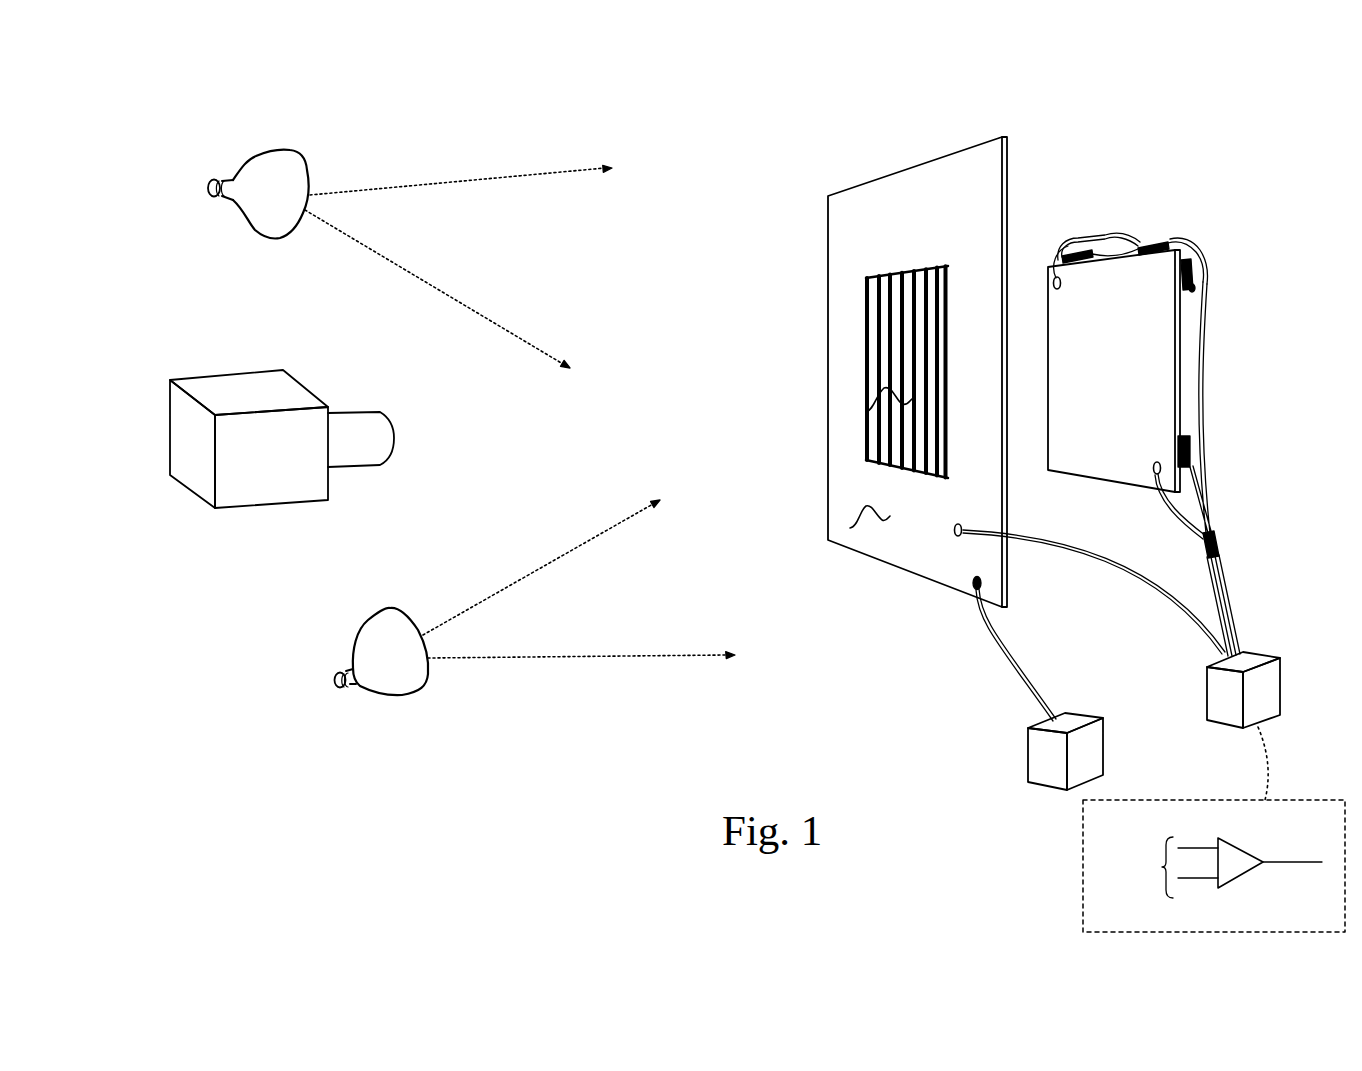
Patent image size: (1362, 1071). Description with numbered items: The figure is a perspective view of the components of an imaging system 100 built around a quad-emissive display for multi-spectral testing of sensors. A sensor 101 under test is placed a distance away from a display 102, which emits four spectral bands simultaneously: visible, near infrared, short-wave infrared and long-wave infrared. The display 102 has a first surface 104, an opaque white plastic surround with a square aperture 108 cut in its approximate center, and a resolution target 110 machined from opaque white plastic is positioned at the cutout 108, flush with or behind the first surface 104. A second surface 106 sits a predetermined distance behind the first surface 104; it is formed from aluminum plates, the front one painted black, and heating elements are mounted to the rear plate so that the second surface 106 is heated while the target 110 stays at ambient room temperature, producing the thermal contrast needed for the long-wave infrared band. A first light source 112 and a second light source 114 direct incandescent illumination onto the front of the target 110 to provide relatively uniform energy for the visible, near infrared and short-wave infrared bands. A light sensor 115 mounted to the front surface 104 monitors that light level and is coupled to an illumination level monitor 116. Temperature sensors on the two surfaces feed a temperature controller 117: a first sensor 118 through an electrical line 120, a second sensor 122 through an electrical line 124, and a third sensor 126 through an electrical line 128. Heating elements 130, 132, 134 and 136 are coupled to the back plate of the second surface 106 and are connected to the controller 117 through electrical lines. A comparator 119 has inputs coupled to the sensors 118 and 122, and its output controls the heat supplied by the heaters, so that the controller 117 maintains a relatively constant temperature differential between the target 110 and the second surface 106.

The imaging system 100 is at (893, 408).
The sensor 101 is at (276, 370).
The display 102 is at (1150, 377).
The first surface 104 is at (850, 528).
The second surface 106 is at (1118, 373).
The aperture 108 is at (884, 264).
The resolution target 110 is at (866, 412).
The first light source 112 is at (285, 150).
The second light source 114 is at (390, 608).
The light sensor 115 is at (972, 584).
The illumination level monitor 116 is at (1068, 713).
The temperature controller 117 is at (1245, 650).
The first sensor 118 is at (955, 535).
The comparator 119 is at (1240, 868).
The electrical line 120 is at (1138, 557).
The second sensor 122 is at (1152, 471).
The electrical line 124 is at (1165, 508).
The third sensor 126 is at (1052, 283).
The electrical line 128 is at (1203, 280).
The heating element 130 is at (1075, 250).
The heating element 132 is at (1155, 243).
The heating element 134 is at (1193, 290).
The heating element 136 is at (1192, 450).